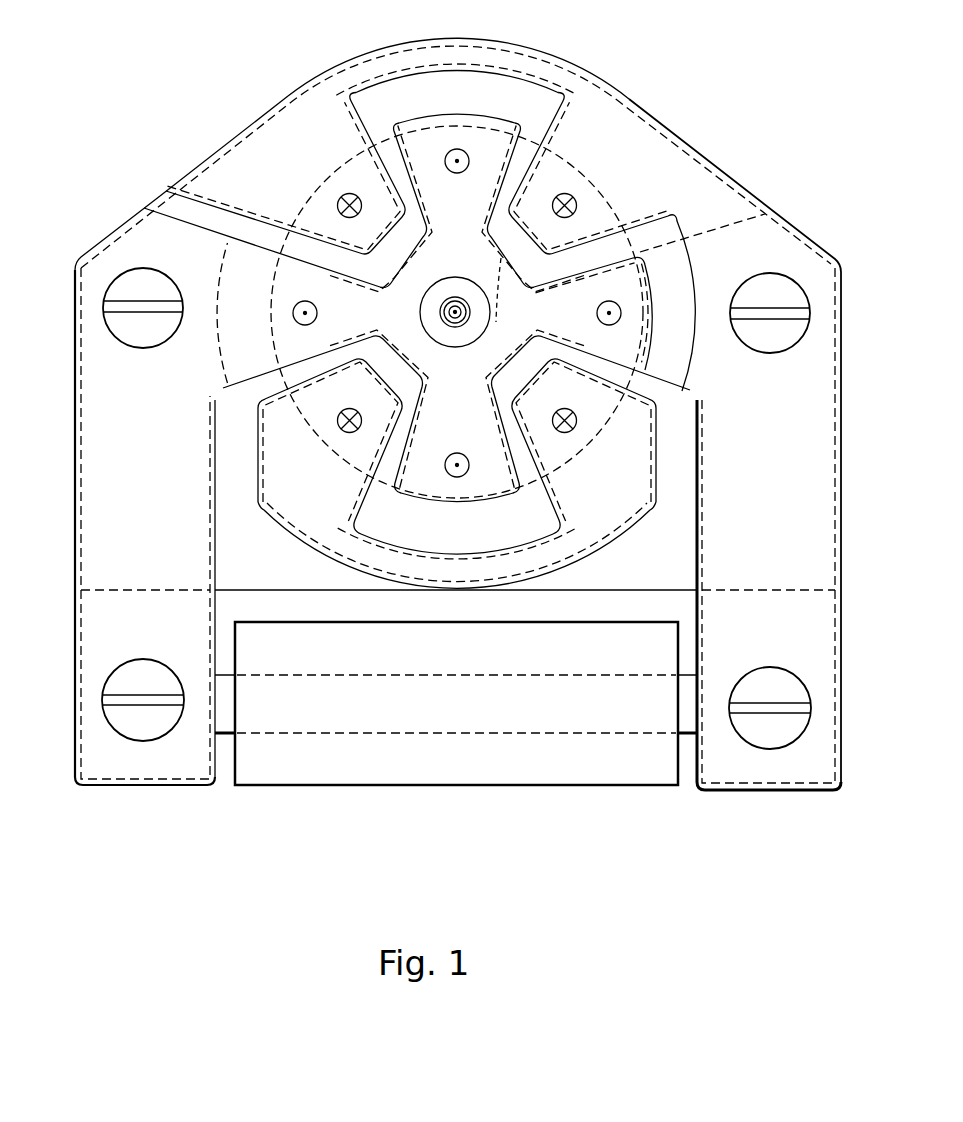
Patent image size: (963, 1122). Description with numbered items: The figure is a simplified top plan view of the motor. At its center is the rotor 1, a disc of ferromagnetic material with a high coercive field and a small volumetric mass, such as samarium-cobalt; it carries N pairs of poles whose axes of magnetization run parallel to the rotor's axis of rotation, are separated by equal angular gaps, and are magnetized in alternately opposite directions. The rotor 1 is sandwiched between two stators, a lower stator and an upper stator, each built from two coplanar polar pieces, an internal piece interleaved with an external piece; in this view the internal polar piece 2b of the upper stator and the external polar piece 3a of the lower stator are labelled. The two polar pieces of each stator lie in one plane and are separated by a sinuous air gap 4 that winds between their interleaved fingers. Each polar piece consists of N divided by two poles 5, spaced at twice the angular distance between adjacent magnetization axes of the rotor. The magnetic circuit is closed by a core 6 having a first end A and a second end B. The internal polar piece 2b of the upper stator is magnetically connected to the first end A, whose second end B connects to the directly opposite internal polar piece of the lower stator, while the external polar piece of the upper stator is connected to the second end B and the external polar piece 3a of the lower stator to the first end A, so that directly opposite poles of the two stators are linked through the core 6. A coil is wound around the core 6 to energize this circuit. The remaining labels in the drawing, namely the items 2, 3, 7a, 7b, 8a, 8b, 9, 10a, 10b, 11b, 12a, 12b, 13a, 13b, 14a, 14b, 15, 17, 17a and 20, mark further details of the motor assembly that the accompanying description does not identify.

The rotor 1 is at (373, 142).
The motor housing 2 is at (462, 770).
The internal polar piece of the upper stator 2b is at (126, 247).
The connecting member 3 is at (225, 720).
The external polar piece of the lower stator 3a is at (172, 201).
The sinuous air gap 4 is at (458, 160).
The poles 5 is at (450, 312).
The core 6 is at (264, 115).
The lower slot 7a is at (381, 382).
The lower slot edge 7b is at (318, 400).
The lower arcuate edge 8a is at (403, 507).
The lower pad edge 8b is at (540, 496).
The fastening holes 9 is at (607, 316).
The outer edge 10a is at (525, 50).
The inner offset edge 10b is at (598, 92).
The hidden edge 11b is at (521, 297).
The right side edge 12a is at (842, 393).
The left inset edge 12b is at (80, 502).
The left side edge 13a is at (75, 434).
The right inset edge 13b is at (832, 465).
The left arcuate edge 14a is at (240, 220).
The right arcuate edge 14b is at (702, 200).
The pad edge 15 is at (393, 450).
The lower screws 17 is at (148, 725).
The upper screws 17a is at (145, 290).
The hub 20 is at (440, 290).
The first end of core A is at (125, 768).
The second end of core B is at (790, 775).